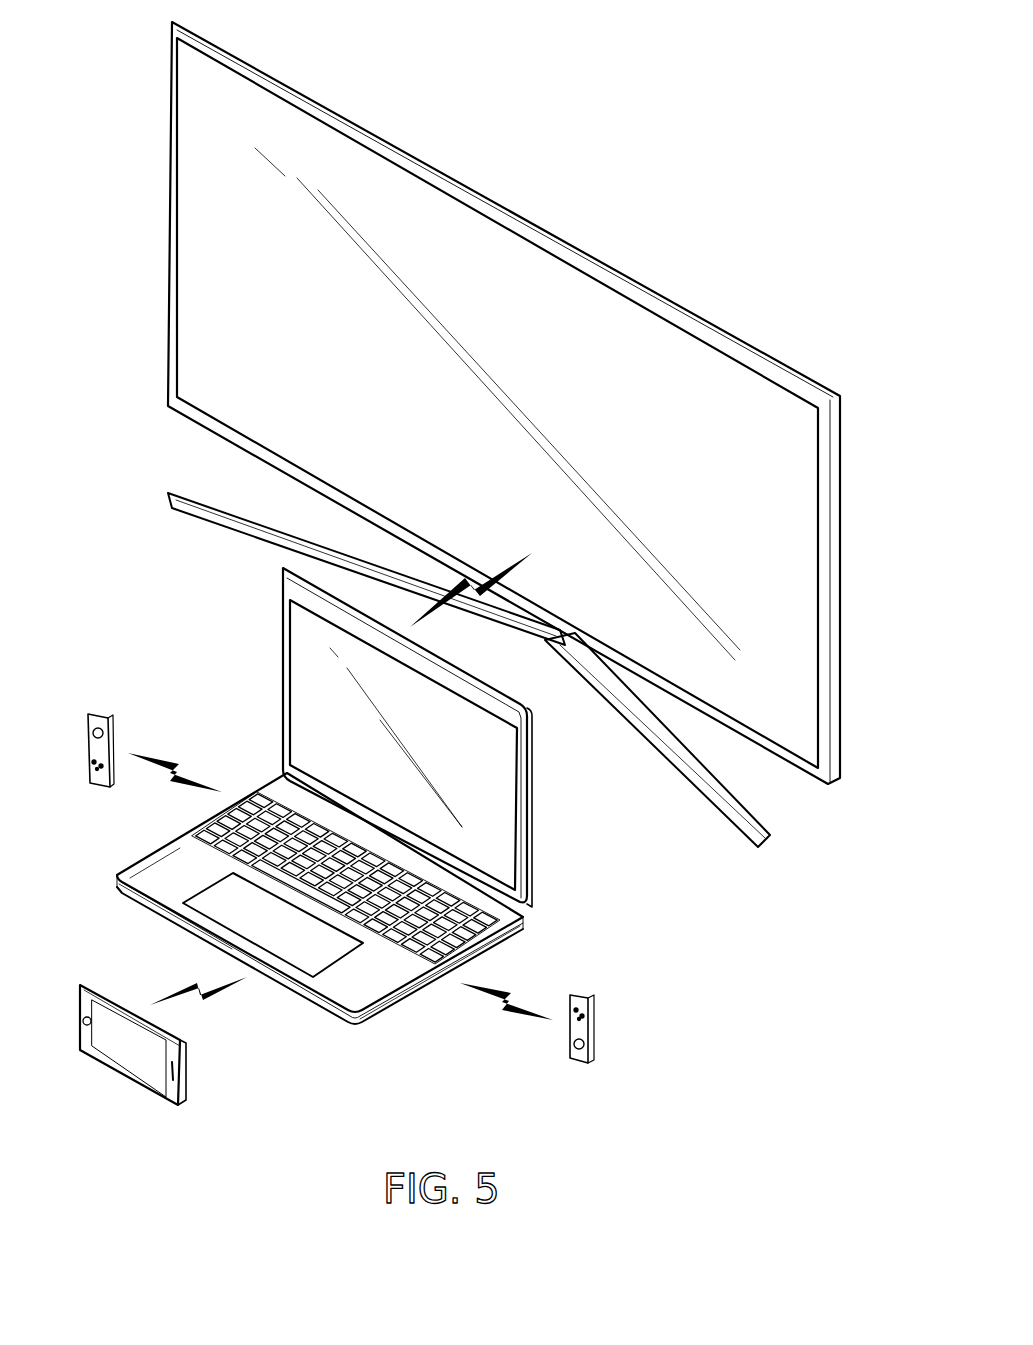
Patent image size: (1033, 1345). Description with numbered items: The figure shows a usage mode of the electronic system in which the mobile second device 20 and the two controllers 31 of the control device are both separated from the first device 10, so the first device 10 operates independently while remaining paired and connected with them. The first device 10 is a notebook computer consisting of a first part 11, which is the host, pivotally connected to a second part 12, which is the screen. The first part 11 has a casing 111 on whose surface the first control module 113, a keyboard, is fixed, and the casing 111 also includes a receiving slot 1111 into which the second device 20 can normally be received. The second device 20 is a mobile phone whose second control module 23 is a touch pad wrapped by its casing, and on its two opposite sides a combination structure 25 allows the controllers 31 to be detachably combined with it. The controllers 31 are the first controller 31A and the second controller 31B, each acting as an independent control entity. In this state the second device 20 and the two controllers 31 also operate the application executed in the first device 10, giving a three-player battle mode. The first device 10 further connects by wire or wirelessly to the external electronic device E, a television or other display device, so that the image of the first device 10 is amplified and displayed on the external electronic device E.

The external electronic device E is at (428, 160).
The first device 10 is at (313, 805).
The second part 12 is at (282, 656).
The first part 11 is at (309, 887).
The first control module 113 is at (170, 851).
The receiving slot 1111 is at (156, 914).
The casing 111 is at (403, 1000).
The controllers 31 is at (346, 866).
The first controller 31A is at (104, 713).
The second controller 31B is at (584, 992).
The second device 20 is at (153, 1064).
The second control module 23 is at (100, 1053).
The combination structure 25 is at (186, 1090).